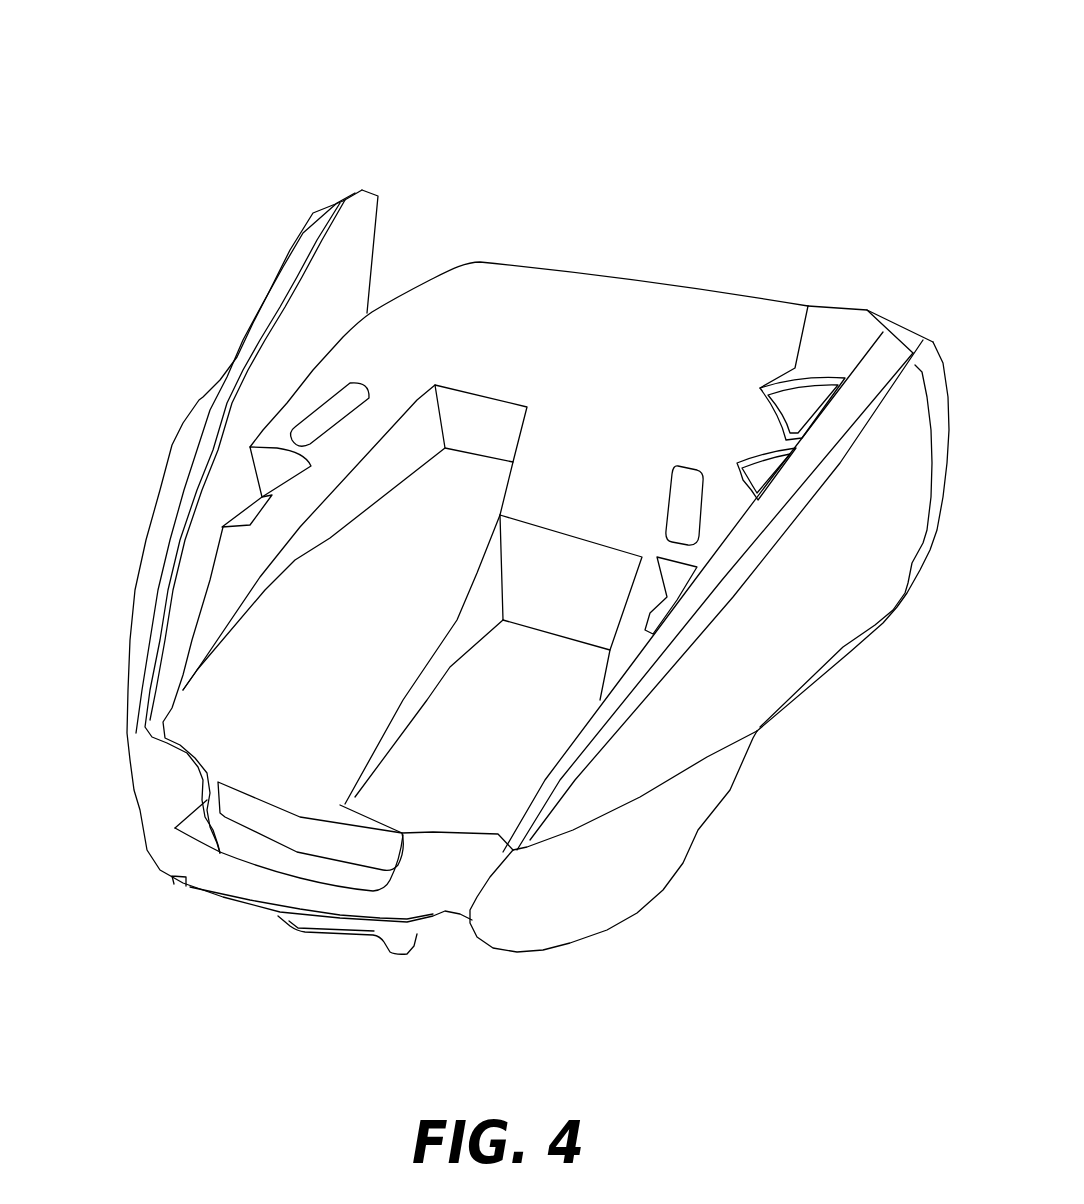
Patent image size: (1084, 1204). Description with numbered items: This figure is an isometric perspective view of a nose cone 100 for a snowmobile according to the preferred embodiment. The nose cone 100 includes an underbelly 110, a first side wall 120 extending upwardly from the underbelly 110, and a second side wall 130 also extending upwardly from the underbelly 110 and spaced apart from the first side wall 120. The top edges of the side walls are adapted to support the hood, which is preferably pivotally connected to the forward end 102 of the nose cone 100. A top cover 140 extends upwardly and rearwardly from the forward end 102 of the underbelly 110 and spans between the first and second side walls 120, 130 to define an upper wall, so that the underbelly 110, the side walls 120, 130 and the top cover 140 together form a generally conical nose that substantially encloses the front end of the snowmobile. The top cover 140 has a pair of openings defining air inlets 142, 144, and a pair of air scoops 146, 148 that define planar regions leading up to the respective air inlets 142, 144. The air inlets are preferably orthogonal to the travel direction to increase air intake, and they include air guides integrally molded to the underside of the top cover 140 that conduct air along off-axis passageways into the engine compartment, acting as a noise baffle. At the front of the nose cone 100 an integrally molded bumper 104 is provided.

The nose cone 100 is at (659, 152).
The forward end 102 is at (257, 937).
The bumper 104 is at (147, 813).
The underbelly 110 is at (614, 933).
The first side wall 120 is at (690, 738).
The second side wall 130 is at (378, 196).
The top cover 140 is at (732, 296).
The air inlet 142 is at (599, 599).
The air inlet 144 is at (512, 440).
The air scoop 146 is at (516, 741).
The air scoop 148 is at (385, 631).